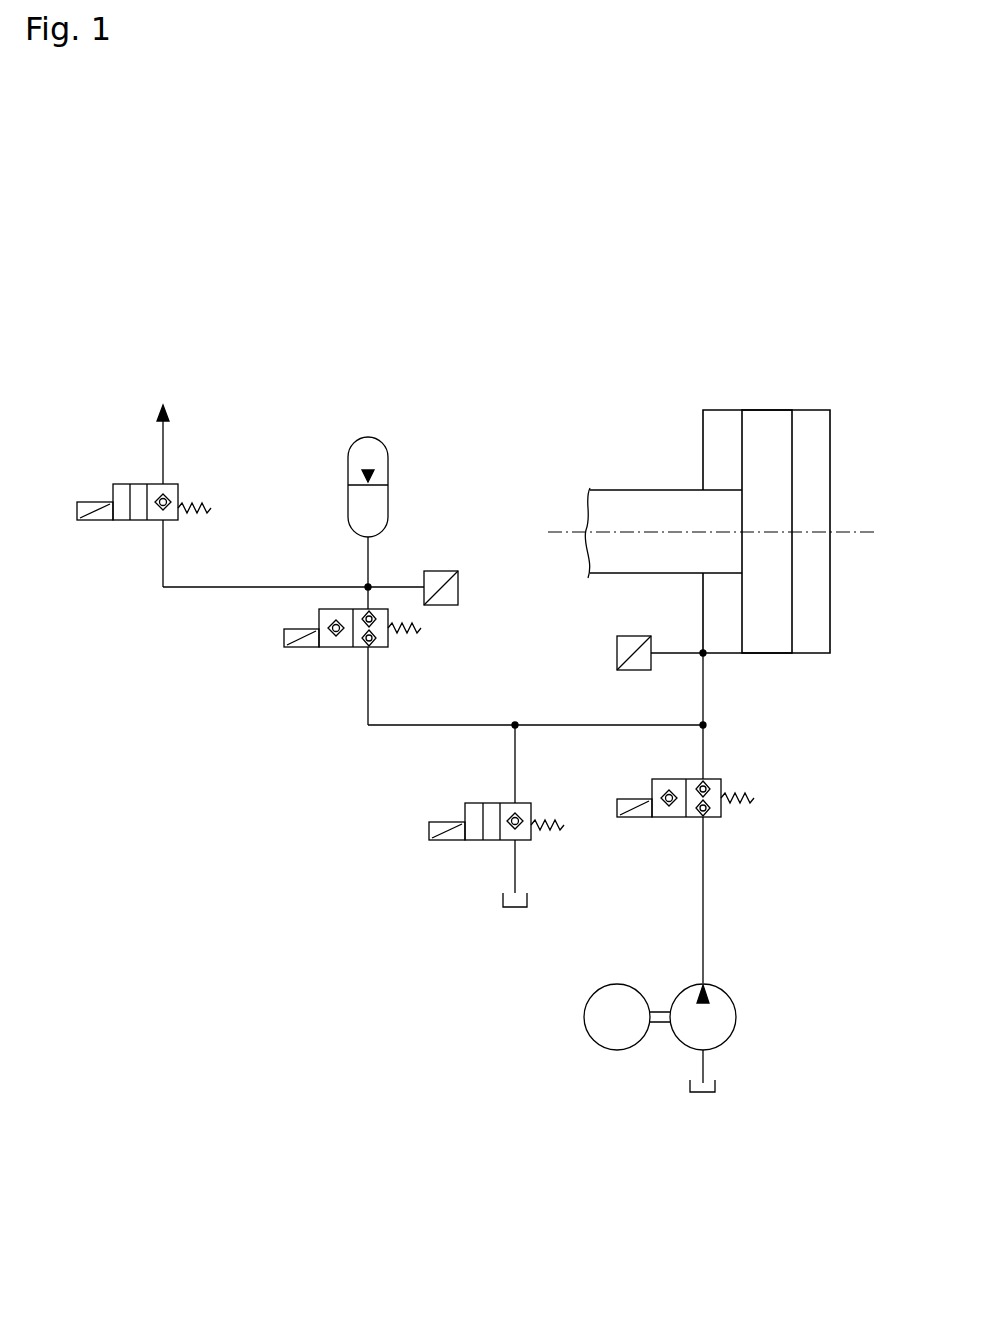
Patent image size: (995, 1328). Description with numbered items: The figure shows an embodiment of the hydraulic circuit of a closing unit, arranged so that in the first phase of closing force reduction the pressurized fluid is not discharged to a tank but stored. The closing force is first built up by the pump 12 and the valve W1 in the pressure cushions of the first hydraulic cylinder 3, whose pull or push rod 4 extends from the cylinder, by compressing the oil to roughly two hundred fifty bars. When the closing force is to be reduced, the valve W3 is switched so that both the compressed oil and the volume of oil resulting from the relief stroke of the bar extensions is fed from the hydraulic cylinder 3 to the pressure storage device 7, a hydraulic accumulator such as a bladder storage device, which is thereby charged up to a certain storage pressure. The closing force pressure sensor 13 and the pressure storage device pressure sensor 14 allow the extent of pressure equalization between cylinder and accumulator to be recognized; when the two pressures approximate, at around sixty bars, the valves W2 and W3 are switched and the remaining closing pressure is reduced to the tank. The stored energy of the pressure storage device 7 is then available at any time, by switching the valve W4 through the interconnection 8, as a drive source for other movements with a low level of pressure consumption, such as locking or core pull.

The first hydraulic cylinder 3 is at (757, 378).
The pull or push rod 4 is at (635, 507).
The pressure storage device 7 is at (379, 418).
The interconnection 8 is at (209, 435).
The pump 12 is at (647, 1083).
The closing force pressure sensor 13 is at (612, 655).
The pressure storage device pressure sensor 14 is at (452, 617).
The valve W1 is at (742, 828).
The valve W2 is at (473, 863).
The valve W3 is at (343, 670).
The valve W4 is at (140, 545).